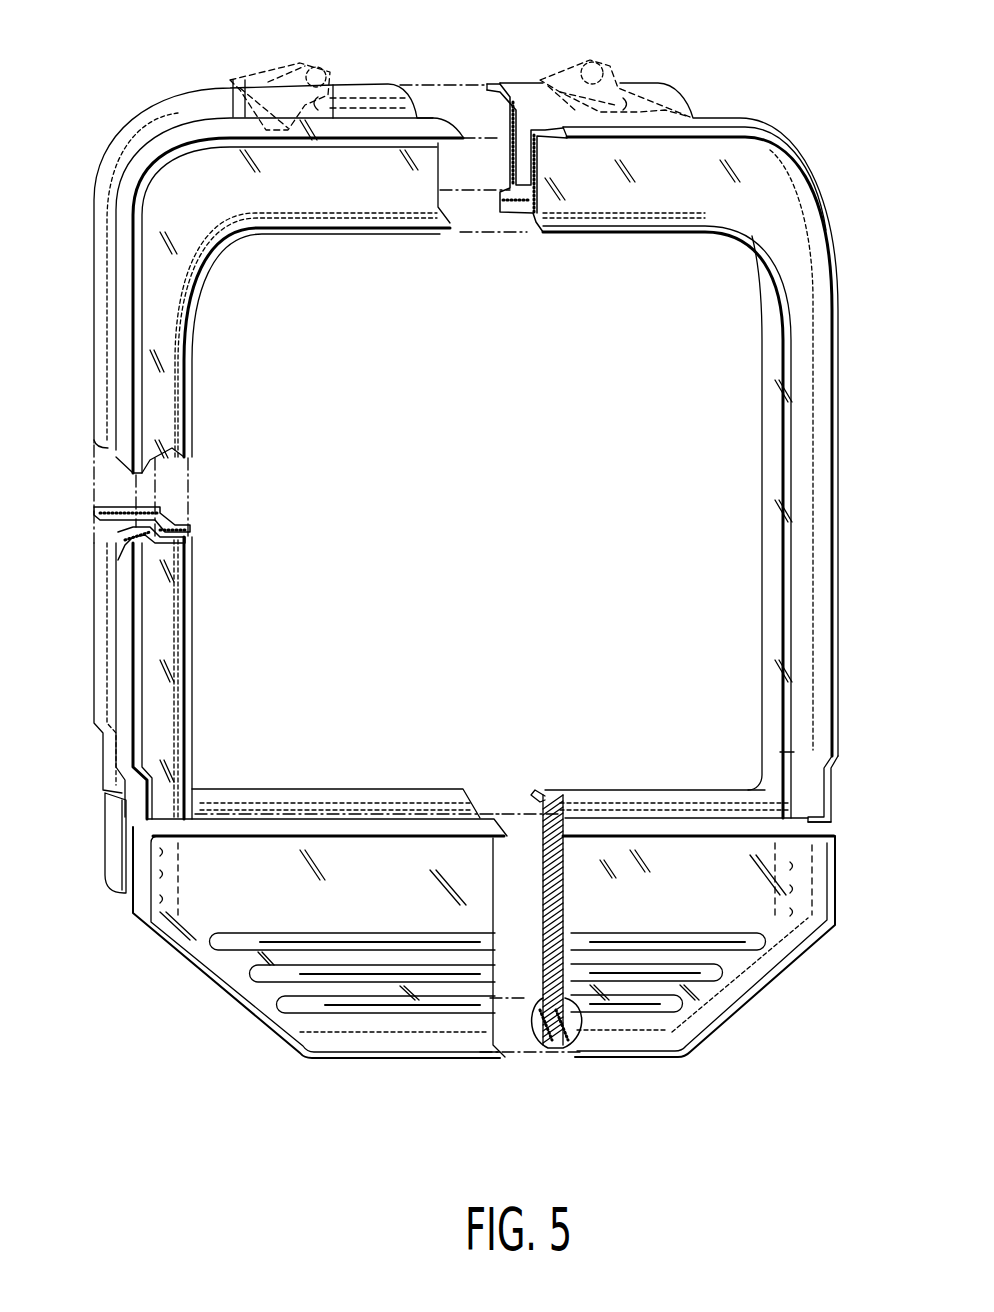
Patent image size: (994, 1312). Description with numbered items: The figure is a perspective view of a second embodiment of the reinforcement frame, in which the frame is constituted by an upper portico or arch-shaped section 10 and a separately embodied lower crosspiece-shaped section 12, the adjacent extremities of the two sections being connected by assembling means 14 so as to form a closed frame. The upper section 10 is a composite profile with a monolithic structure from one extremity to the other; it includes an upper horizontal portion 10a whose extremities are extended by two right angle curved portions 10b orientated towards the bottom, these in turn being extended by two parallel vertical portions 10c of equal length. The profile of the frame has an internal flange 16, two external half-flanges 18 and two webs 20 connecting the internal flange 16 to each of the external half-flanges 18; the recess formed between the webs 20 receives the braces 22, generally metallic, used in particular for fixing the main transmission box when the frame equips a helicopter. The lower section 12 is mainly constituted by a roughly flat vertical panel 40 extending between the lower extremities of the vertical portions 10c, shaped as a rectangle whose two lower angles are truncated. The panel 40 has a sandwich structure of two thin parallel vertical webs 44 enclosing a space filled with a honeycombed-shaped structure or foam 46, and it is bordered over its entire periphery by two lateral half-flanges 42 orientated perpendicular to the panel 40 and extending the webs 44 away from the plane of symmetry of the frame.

The upper portico-shaped section 10 is at (743, 91).
The upper horizontal portion 10a is at (396, 234).
The right angle curved portion 10b is at (226, 253).
The vertical portion 10c is at (192, 630).
The lower crosspiece-shaped section 12 is at (296, 1058).
The assembling means 14 is at (124, 929).
The internal flange 16 is at (500, 210).
The external half-flange 18 is at (437, 128).
The web 20 is at (165, 511).
The brace 22 is at (302, 70).
The vertical panel 40 is at (684, 866).
The lateral half-flange 42 is at (352, 832).
The web 44 is at (540, 1048).
The honeycombed-shaped structure or foam 46 is at (541, 843).